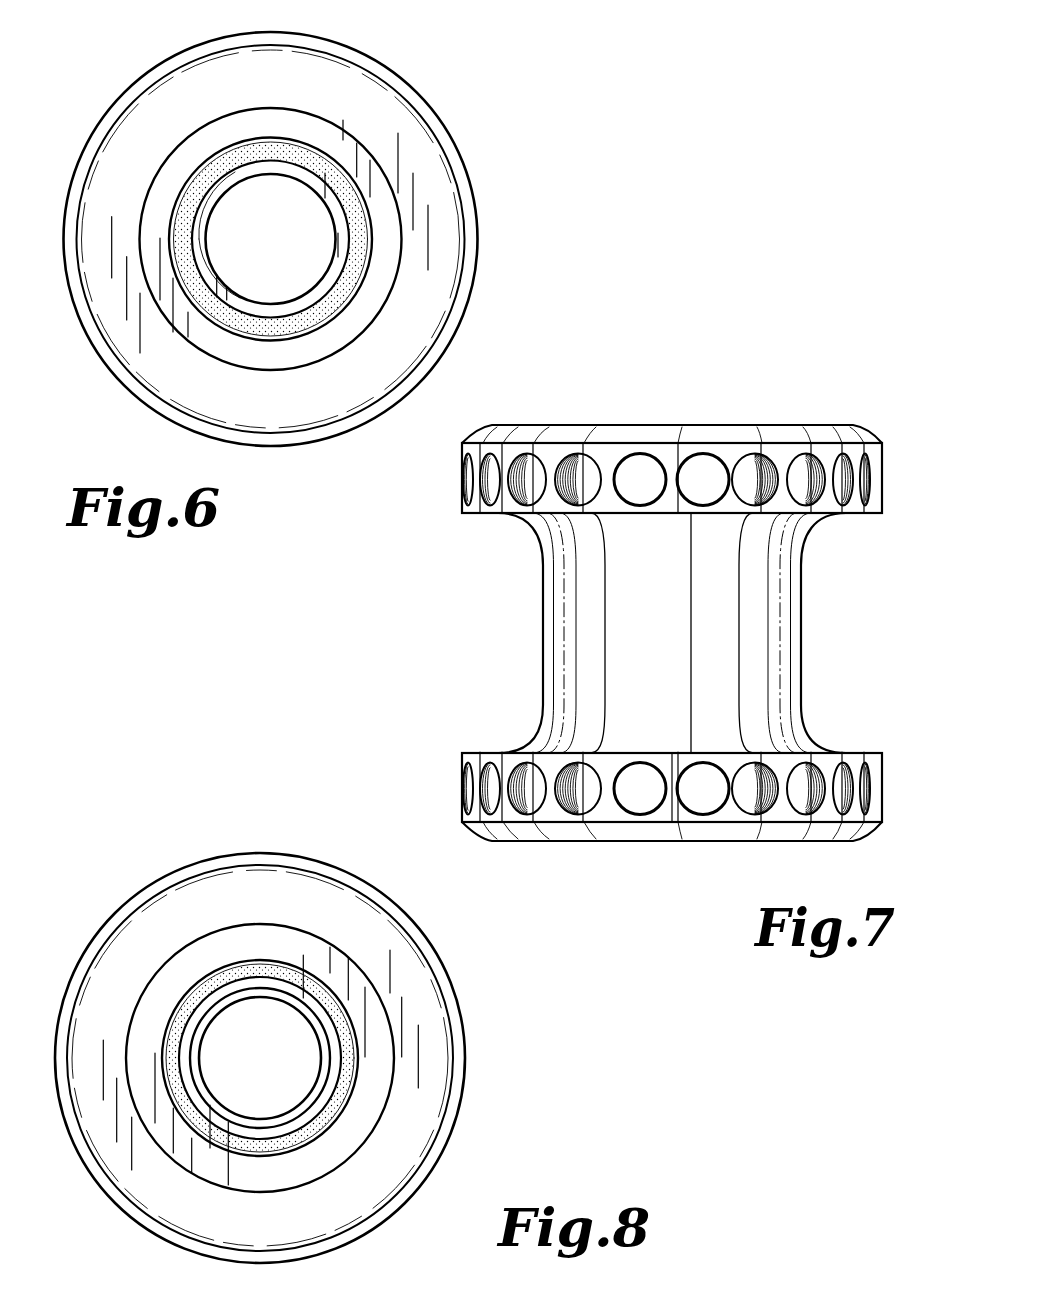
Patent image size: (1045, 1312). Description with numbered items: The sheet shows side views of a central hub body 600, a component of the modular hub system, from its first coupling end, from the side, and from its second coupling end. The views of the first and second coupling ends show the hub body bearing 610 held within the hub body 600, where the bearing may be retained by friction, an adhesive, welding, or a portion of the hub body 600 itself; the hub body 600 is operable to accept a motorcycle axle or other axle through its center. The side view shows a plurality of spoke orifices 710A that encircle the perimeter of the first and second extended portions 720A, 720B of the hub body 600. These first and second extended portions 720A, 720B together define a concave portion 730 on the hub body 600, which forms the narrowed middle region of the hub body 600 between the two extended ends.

In FIG. 6, the hub body 600 is at (493, 162).
In FIG. 7, the hub body 600 is at (627, 580).
In FIG. 8, the hub body 600 is at (226, 830).
In FIG. 6, the hub bearing 610 is at (256, 150).
In FIG. 8, the hub bearing 610 is at (241, 962).
In FIG. 7, the spoke orifices 710A is at (685, 507).
In FIG. 7, the first extended end 720A is at (447, 427).
In FIG. 7, the second extended end 720B is at (447, 751).
In FIG. 7, the concave portion 730 is at (447, 525).